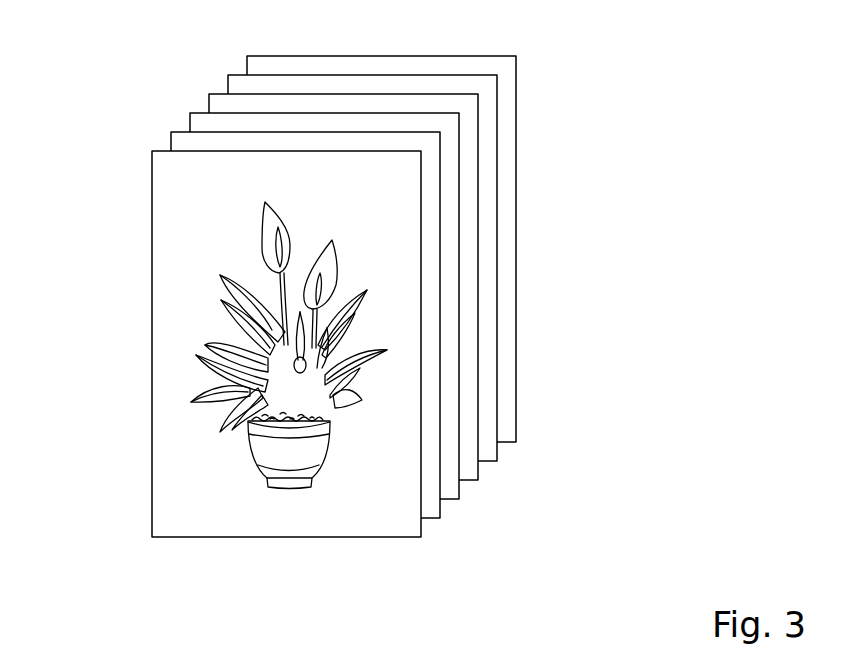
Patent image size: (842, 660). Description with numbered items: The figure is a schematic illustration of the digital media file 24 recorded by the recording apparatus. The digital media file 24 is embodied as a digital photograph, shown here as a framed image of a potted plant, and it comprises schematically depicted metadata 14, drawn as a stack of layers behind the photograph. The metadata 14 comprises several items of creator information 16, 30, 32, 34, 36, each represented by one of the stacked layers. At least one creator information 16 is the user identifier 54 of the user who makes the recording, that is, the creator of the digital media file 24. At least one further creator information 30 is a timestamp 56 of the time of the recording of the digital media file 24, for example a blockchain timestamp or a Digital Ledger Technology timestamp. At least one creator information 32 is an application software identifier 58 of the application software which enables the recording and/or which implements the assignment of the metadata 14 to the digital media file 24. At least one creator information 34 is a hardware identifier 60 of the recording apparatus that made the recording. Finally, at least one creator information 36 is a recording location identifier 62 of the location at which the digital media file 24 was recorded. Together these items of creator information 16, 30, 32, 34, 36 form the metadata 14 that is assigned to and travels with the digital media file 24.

The metadata 14 is at (145, 83).
The creator information 16 is at (390, 353).
The user identifier 54 is at (432, 509).
The creator information 30 is at (400, 326).
The timestamp 56 is at (447, 488).
The creator information 32 is at (413, 298).
The application software identifier 58 is at (468, 470).
The creator information 34 is at (437, 270).
The hardware identifier 60 is at (487, 453).
The creator information 36 is at (456, 249).
The recording location identifier 62 is at (505, 429).
The digital media file 24 is at (212, 477).